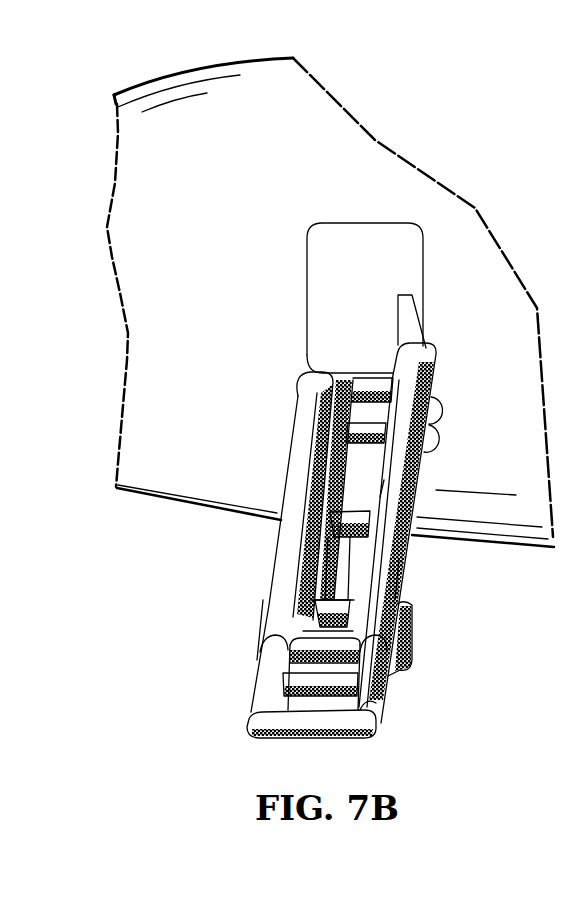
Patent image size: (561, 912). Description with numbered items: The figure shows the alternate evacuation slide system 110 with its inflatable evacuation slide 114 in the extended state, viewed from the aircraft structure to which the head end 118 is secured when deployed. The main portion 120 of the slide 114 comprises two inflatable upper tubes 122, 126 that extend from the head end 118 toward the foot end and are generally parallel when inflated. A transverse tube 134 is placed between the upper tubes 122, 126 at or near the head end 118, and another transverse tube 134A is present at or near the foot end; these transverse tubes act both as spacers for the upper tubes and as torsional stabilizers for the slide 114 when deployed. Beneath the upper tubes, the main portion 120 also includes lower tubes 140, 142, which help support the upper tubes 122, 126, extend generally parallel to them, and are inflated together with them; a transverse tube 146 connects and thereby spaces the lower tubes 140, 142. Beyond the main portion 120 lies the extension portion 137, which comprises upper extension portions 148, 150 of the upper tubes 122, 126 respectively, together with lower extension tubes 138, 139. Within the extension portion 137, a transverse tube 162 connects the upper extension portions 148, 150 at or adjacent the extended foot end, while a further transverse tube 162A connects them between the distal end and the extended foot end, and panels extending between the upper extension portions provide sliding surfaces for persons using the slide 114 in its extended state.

The slide system 110 is at (262, 328).
The inflatable evacuation slide 114 is at (252, 391).
The head end 118 is at (322, 331).
The main portion 120 is at (240, 538).
The inflatable upper tube 122 is at (302, 448).
The inflatable upper tube 126 is at (405, 472).
The transverse tube 134 is at (367, 378).
The transverse tube 134A is at (292, 641).
The extension portion 137 is at (430, 688).
The lower extension tube 138 is at (266, 612).
The lower extension tube 139 is at (412, 641).
The lower tube 140 is at (336, 511).
The lower tube 142 is at (395, 562).
The transverse tube 146 is at (380, 495).
The upper extension portion 148 is at (268, 702).
The upper extension portion 150 is at (368, 696).
The transverse tube 162 is at (315, 727).
The transverse tube 162A is at (259, 683).